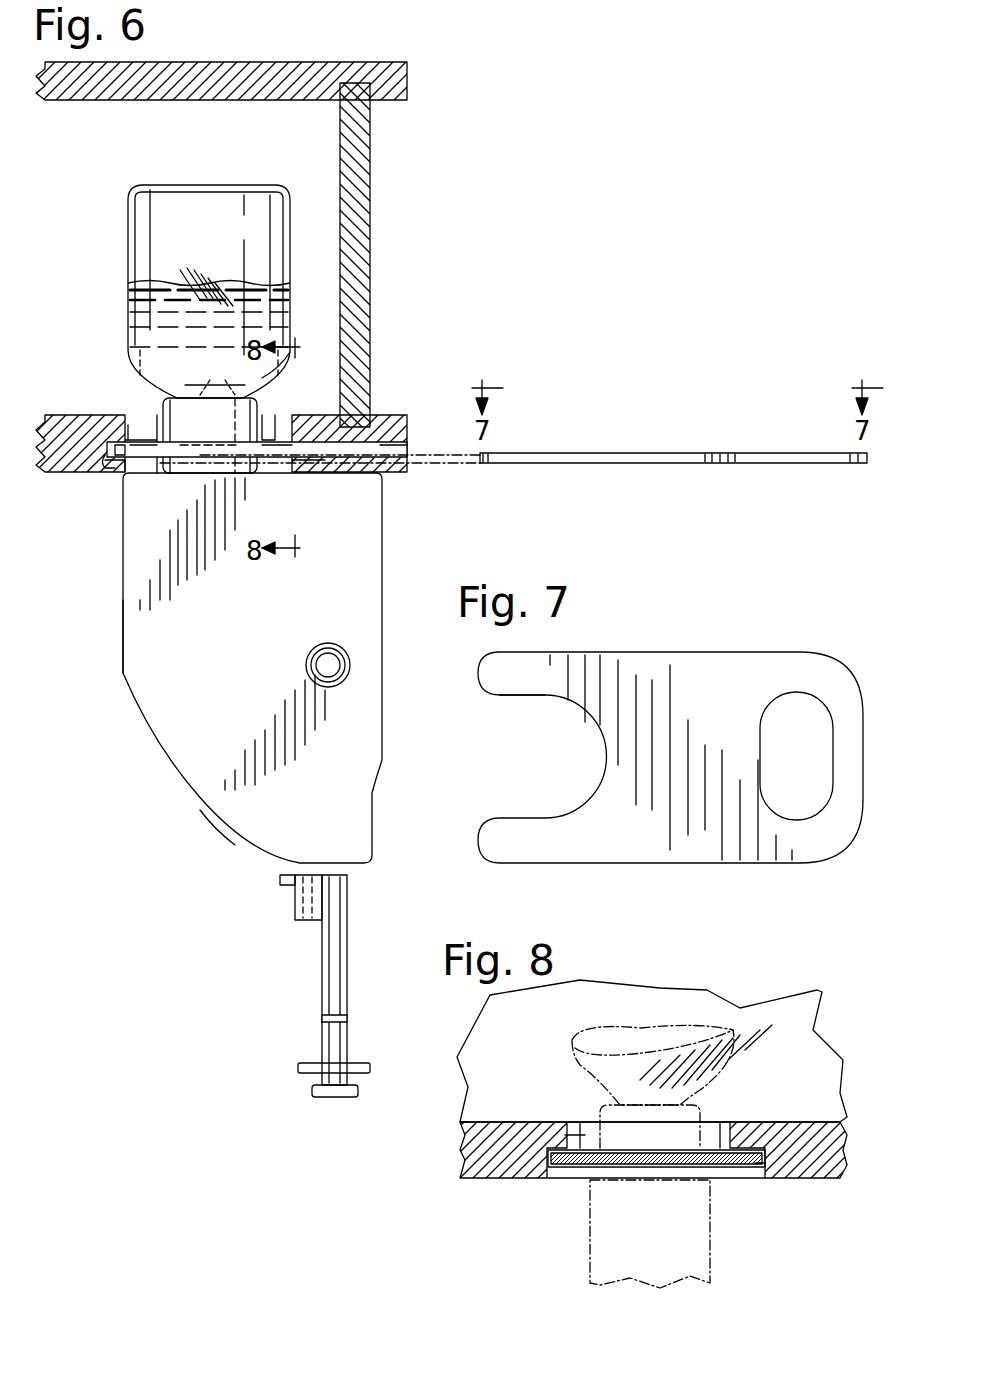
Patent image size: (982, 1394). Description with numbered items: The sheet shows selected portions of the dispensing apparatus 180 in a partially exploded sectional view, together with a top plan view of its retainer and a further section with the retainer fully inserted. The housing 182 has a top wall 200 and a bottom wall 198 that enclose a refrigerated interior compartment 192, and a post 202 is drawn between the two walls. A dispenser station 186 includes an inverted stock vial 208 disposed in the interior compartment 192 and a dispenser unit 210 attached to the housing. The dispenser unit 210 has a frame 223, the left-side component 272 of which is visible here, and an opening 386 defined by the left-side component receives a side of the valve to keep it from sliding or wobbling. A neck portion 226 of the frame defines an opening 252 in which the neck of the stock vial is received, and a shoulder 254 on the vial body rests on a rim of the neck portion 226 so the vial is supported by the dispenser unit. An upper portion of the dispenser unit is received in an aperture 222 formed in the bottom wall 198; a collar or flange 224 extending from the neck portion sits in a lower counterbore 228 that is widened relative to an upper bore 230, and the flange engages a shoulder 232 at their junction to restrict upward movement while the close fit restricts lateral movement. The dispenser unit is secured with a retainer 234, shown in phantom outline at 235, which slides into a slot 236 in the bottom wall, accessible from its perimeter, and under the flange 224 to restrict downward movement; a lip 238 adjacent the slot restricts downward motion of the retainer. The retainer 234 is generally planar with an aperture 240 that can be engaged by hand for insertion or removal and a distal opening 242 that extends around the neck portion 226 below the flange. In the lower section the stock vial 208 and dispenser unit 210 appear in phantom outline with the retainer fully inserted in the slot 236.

In FIG. 6, the top wall 200 is at (407, 78).
In FIG. 6, the post 202 is at (370, 193).
In FIG. 8, the post 202 is at (668, 988).
In FIG. 6, the interior compartment 192 is at (200, 163).
In FIG. 6, the stock vial 208 is at (128, 250).
In FIG. 8, the stock vial 208 is at (572, 1065).
In FIG. 6, the opening 252 is at (200, 385).
In FIG. 6, the shoulder 254 is at (258, 383).
In FIG. 6, the neck portion 226 is at (165, 405).
In FIG. 8, the neck portion 226 is at (600, 1113).
In FIG. 6, the bottom wall 198 is at (50, 472).
In FIG. 8, the bottom wall 198 is at (480, 1180).
In FIG. 6, the aperture 222 is at (133, 440).
In FIG. 8, the aperture 222 is at (722, 1125).
In FIG. 6, the shoulder 232 is at (102, 460).
In FIG. 6, the lower counterbore 228 is at (112, 462).
In FIG. 6, the flange 224 is at (190, 450).
In FIG. 8, the flange 224 is at (565, 1130).
In FIG. 6, the upper bore 230 is at (130, 440).
In FIG. 6, the phantom outline of retainer 235 is at (312, 465).
In FIG. 6, the slot 236 is at (397, 458).
In FIG. 8, the slot 236 is at (755, 1166).
In FIG. 6, the retainer 234 is at (648, 452).
In FIG. 7, the retainer 234 is at (770, 633).
In FIG. 8, the retainer 234 is at (665, 1170).
In FIG. 6, the lip 238 is at (410, 458).
In FIG. 6, the dispenser unit 210 is at (152, 790).
In FIG. 8, the dispenser unit 210 is at (590, 1275).
In FIG. 6, the opening 386 is at (318, 652).
In FIG. 6, the frame 223 is at (122, 678).
In FIG. 6, the left-side component 272 is at (217, 835).
In FIG. 6, the dispenser station 186 is at (162, 932).
In FIG. 6, the dispensing apparatus 180 is at (622, 183).
In FIG. 6, the housing 182 is at (510, 237).
In FIG. 7, the aperture 240 is at (762, 730).
In FIG. 7, the distal opening 242 is at (538, 700).